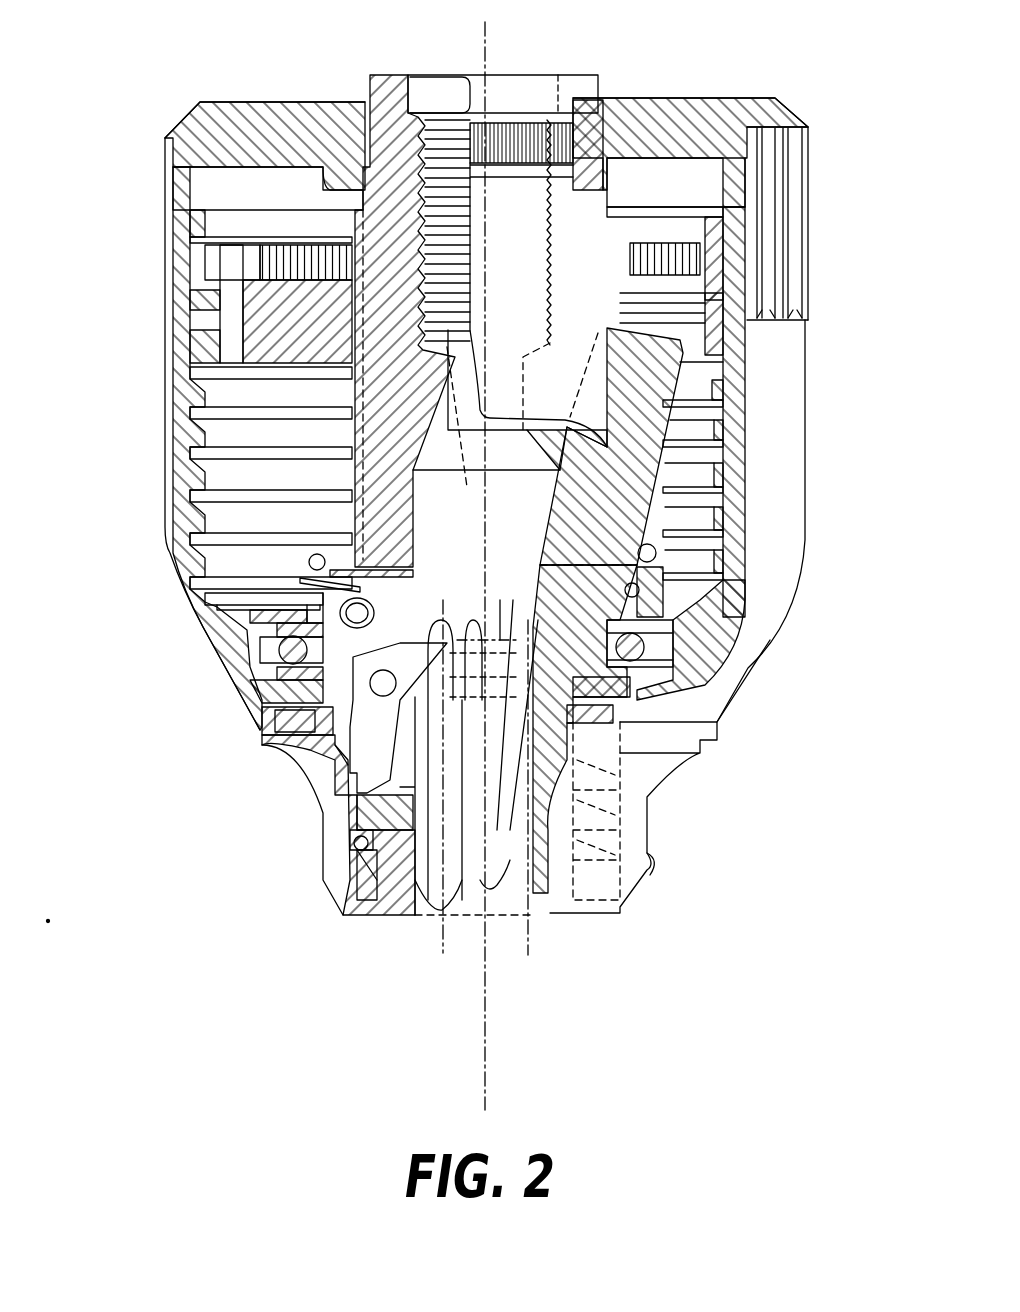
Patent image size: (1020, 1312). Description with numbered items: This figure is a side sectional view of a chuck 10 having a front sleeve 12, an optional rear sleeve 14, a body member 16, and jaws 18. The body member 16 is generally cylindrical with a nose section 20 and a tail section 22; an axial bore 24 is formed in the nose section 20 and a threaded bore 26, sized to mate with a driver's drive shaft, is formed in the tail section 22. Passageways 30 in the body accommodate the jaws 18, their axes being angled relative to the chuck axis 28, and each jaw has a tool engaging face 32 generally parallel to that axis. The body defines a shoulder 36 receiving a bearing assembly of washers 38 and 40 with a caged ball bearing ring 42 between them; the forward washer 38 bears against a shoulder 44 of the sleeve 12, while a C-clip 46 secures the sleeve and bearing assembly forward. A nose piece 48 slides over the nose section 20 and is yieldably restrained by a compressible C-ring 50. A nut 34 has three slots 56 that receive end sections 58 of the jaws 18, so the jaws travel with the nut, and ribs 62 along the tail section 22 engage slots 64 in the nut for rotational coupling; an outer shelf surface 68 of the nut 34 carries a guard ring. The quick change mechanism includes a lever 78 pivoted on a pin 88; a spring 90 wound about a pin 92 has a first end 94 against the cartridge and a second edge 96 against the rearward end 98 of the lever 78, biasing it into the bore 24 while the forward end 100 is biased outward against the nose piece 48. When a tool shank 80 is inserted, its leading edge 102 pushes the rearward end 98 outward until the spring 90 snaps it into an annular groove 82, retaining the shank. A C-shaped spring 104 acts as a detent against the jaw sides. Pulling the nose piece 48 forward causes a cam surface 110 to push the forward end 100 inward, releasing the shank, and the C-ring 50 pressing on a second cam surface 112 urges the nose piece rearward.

The chuck 10 is at (152, 467).
The front sleeve 12 is at (805, 472).
The rear sleeve 14 is at (808, 237).
The body member 16 is at (350, 522).
The jaws 18 is at (677, 390).
The nose section 20 is at (340, 920).
The tail section 22 is at (370, 85).
The axial bore 24 is at (425, 915).
The threaded bore 26 is at (428, 93).
The chuck axis 28 is at (487, 25).
The passageways 30 is at (687, 583).
The tool engaging face 32 is at (463, 793).
The nut 34 is at (215, 315).
The shoulder 36 is at (670, 633).
The forward washer 38 is at (262, 677).
The rearward washer 40 is at (250, 625).
The caged ball bearing ring 42 is at (280, 652).
The sleeve shoulder 44 is at (275, 757).
The C-clip 46 is at (262, 715).
The nose piece 48 is at (650, 870).
The C-ring 50 is at (343, 895).
The slots 56 is at (690, 323).
The end sections 58 is at (703, 360).
The ribs 62 is at (352, 220).
The slots 64 is at (265, 285).
The outer shelf surface 68 is at (245, 345).
The lever 78 is at (397, 737).
The tool shank 80 is at (528, 940).
The annular groove 82 is at (630, 700).
The pin 88 is at (375, 678).
The spring 90 is at (320, 613).
The pin 92 is at (385, 612).
The first end 94 is at (300, 580).
The second edge 96 is at (450, 630).
The rearward end 98 is at (490, 625).
The forward end 100 is at (317, 800).
The leading edge 102 is at (497, 545).
The C-shaped spring 104 is at (308, 558).
The cam surface 110 is at (305, 760).
The second cam surface 112 is at (345, 850).